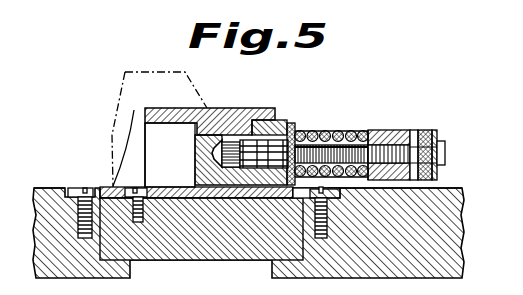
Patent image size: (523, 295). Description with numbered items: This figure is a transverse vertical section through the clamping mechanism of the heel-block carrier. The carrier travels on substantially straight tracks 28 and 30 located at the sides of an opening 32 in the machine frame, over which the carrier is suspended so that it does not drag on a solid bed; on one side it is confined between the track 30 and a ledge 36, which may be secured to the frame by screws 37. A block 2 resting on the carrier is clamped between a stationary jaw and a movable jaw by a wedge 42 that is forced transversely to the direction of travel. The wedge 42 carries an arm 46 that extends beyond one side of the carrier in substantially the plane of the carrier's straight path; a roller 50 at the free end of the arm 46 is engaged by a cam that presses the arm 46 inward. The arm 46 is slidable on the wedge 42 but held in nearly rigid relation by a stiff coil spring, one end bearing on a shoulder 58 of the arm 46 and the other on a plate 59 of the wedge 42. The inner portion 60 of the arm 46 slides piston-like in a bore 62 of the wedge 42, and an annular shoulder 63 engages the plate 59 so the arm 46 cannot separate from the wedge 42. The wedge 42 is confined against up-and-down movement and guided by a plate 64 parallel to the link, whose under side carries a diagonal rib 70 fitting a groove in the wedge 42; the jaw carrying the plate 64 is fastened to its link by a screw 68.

The block 2 is at (131, 72).
The track 28 is at (272, 272).
The track 30 is at (161, 133).
The opening 32 is at (205, 261).
The ledge 36 is at (110, 186).
The screws 37 is at (80, 187).
The wedge 42 is at (196, 162).
The arm 46 is at (340, 140).
The roller 50 is at (447, 150).
The shoulder 58 is at (368, 128).
The plate 59 is at (327, 128).
The inner portion 60 is at (293, 122).
The bore 62 is at (268, 166).
The annular shoulder 63 is at (300, 130).
The plate 64 is at (249, 104).
The screw 68 is at (196, 180).
The rib 70 is at (205, 130).